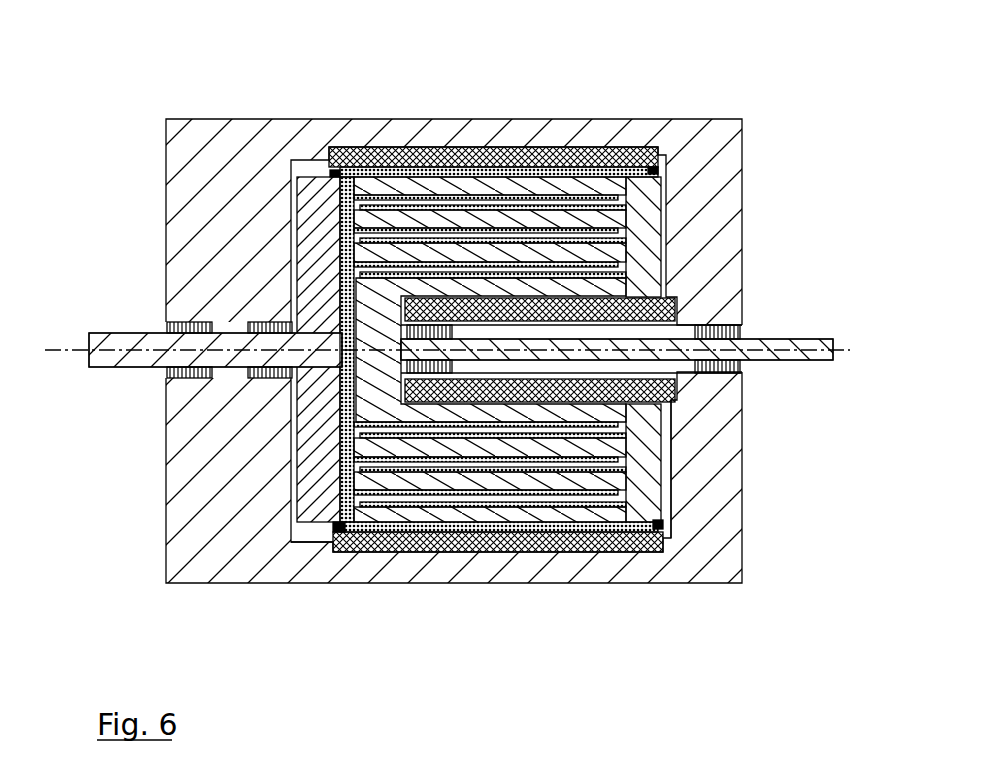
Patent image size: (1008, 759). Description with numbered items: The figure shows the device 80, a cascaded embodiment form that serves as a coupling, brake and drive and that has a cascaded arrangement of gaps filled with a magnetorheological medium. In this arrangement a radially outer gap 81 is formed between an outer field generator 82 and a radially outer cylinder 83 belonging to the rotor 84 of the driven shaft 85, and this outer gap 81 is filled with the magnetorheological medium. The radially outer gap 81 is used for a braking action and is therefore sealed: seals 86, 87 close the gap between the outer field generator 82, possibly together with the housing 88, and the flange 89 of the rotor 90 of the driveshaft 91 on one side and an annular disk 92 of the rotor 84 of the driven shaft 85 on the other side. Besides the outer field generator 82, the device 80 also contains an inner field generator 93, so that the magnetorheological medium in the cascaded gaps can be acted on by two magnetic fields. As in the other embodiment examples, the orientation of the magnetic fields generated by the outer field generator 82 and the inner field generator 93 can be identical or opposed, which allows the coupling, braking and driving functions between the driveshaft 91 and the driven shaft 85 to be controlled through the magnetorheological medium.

The device 80 is at (160, 88).
The radially outer gap 81 is at (402, 165).
The outer field generator 82 is at (460, 173).
The radially outer cylinder 83 is at (517, 185).
The rotor 84 is at (672, 456).
The driven shaft 85 is at (808, 348).
The seal 86 is at (334, 170).
The seal 87 is at (652, 165).
The housing 88 is at (241, 112).
The flange 89 is at (313, 258).
The rotor 90 is at (308, 535).
The driveshaft 91 is at (135, 343).
The annular disk 92 is at (653, 493).
The inner field generator 93 is at (675, 387).